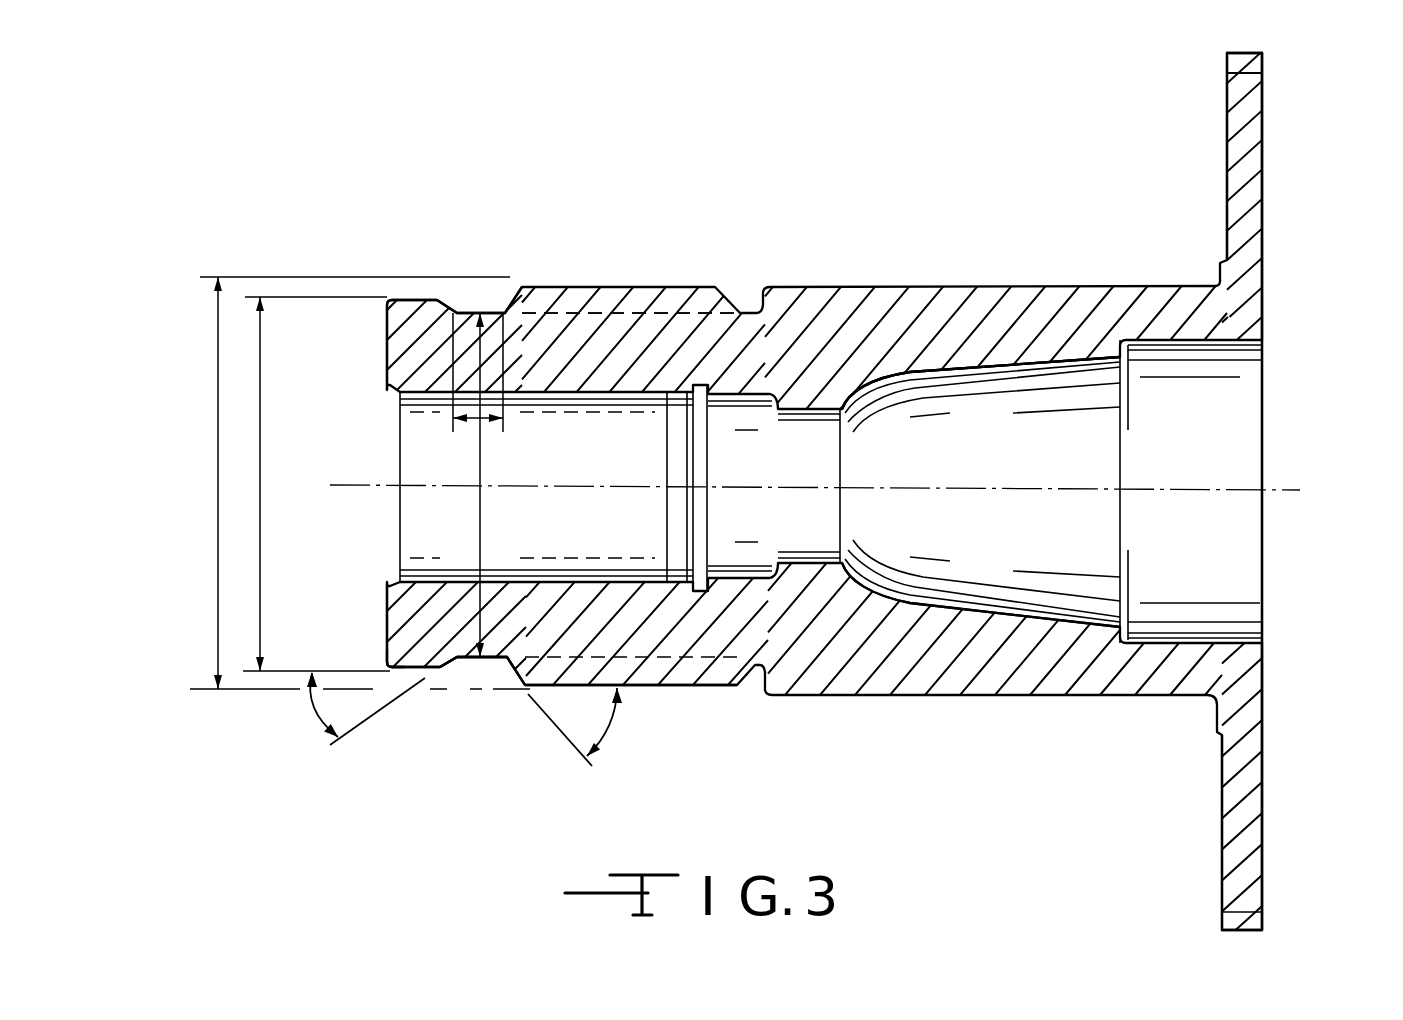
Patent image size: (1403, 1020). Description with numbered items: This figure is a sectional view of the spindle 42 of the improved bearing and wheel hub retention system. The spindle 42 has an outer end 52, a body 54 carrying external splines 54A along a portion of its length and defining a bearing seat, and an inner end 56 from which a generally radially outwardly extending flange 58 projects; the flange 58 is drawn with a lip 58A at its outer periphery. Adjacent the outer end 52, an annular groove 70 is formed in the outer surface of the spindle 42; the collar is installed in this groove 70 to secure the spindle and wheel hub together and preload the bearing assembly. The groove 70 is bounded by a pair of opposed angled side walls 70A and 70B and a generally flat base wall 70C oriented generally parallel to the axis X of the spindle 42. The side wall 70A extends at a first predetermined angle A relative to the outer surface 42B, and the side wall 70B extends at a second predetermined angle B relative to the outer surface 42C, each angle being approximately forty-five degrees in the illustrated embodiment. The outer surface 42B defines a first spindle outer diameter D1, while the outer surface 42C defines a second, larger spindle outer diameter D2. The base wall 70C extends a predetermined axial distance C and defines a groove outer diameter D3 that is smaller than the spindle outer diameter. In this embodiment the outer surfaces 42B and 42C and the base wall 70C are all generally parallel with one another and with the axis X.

The spindle 42 is at (868, 251).
The outer surface 42B is at (410, 676).
The outer surface 42C is at (643, 688).
The outer end 52 is at (387, 340).
The body 54 is at (937, 627).
The external splines 54A is at (655, 300).
The inner end 56 is at (1270, 303).
The flange 58 is at (1237, 187).
The flange lip 58A is at (1238, 63).
The annular groove 70 is at (474, 300).
The side wall 70A is at (443, 672).
The side wall 70B is at (508, 673).
The base wall 70C is at (468, 660).
The first spindle outer diameter D1 is at (262, 468).
The second spindle outer diameter D2 is at (218, 563).
The groove outer diameter D3 is at (487, 522).
The axial distance C is at (487, 420).
The first predetermined angle A is at (312, 706).
The second predetermined angle B is at (608, 735).
The axis X is at (945, 482).